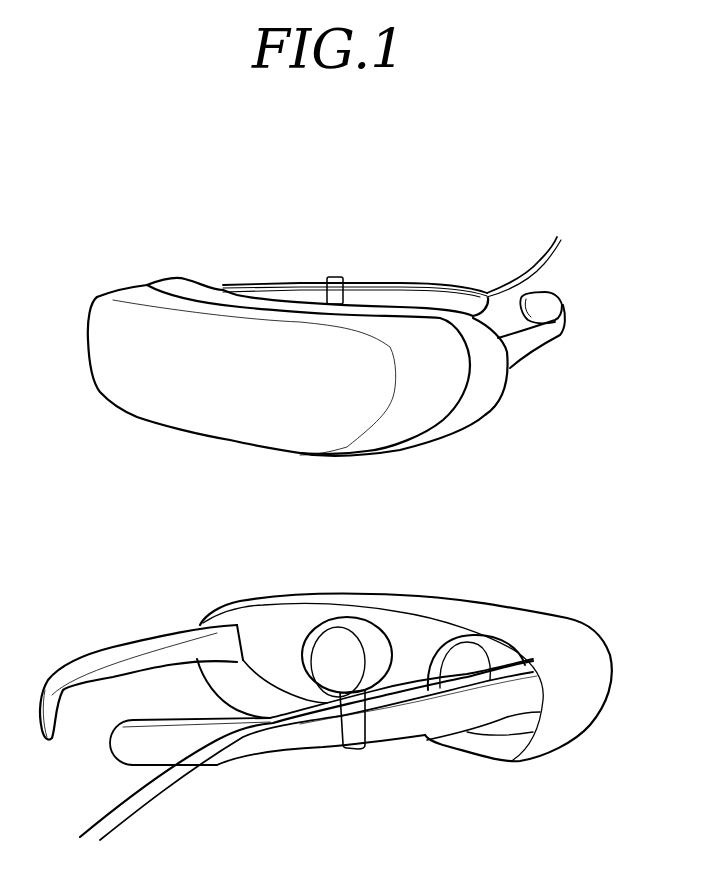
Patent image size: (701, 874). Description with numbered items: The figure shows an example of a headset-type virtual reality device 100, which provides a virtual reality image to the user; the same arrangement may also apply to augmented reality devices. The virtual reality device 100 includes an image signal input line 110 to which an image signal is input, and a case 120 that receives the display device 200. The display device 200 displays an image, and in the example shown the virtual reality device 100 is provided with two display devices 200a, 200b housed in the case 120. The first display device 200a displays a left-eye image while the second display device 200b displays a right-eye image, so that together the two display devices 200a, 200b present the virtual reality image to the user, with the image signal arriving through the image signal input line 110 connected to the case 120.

The virtual reality device 100 is at (140, 252).
The image signal input line 110 is at (549, 238).
The case 120 is at (406, 338).
The display device 200 is at (463, 545).
The first display device 200a is at (328, 642).
The second display device 200b is at (457, 662).